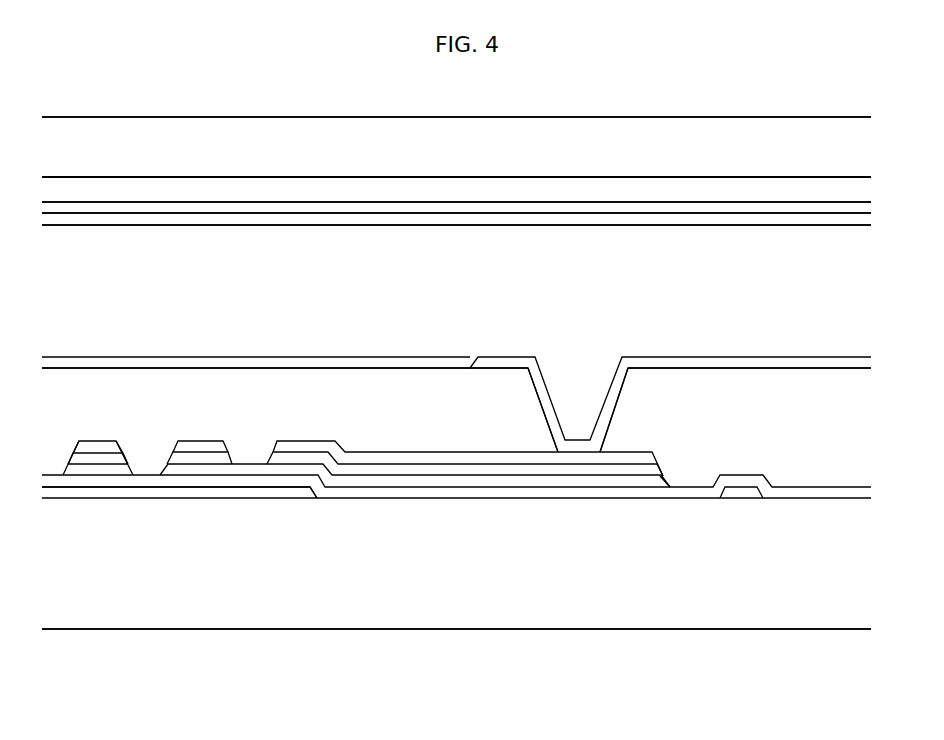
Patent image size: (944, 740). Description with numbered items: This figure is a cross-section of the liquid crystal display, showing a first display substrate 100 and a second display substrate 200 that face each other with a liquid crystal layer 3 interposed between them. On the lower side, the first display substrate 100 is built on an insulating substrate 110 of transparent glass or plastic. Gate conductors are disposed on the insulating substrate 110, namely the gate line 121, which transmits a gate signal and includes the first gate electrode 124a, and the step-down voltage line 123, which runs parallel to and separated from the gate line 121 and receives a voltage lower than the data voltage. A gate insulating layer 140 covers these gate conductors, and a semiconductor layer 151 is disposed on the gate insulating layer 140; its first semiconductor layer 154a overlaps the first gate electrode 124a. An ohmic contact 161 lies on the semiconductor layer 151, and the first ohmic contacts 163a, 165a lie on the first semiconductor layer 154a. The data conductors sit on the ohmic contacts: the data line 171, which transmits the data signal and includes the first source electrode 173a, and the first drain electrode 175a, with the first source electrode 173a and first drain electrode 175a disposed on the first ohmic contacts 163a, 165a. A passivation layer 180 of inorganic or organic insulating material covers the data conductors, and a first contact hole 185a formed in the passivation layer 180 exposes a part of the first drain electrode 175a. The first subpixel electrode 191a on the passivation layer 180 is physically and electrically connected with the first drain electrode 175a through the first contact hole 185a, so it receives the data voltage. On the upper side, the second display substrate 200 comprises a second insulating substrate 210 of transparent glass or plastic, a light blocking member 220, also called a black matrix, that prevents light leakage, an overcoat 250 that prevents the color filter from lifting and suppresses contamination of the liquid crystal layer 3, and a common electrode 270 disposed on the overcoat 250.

The second display substrate 200 is at (877, 117).
The second insulating substrate 210 is at (603, 127).
The light blocking member 220 is at (523, 188).
The overcoat 250 is at (453, 207).
The common electrode 270 is at (378, 218).
The liquid crystal layer 3 is at (877, 225).
The first display substrate 100 is at (877, 368).
The insulating substrate 110 is at (807, 628).
The gate line 121 is at (73, 492).
The first gate electrode 124a is at (277, 492).
The step-down voltage line 123 is at (738, 493).
The gate insulating layer 140 is at (683, 493).
The semiconductor layer 151 is at (118, 468).
The ohmic contact 161 is at (70, 450).
The data line 171 is at (103, 445).
The first semiconductor layer 154a is at (268, 462).
The first ohmic contact 163a is at (208, 450).
The first ohmic contact 165a is at (310, 455).
The first source electrode 173a is at (185, 442).
The first drain electrode 175a is at (333, 444).
The passivation layer 180 is at (512, 440).
The first contact hole 185a is at (618, 393).
The first subpixel electrode 191a is at (689, 363).